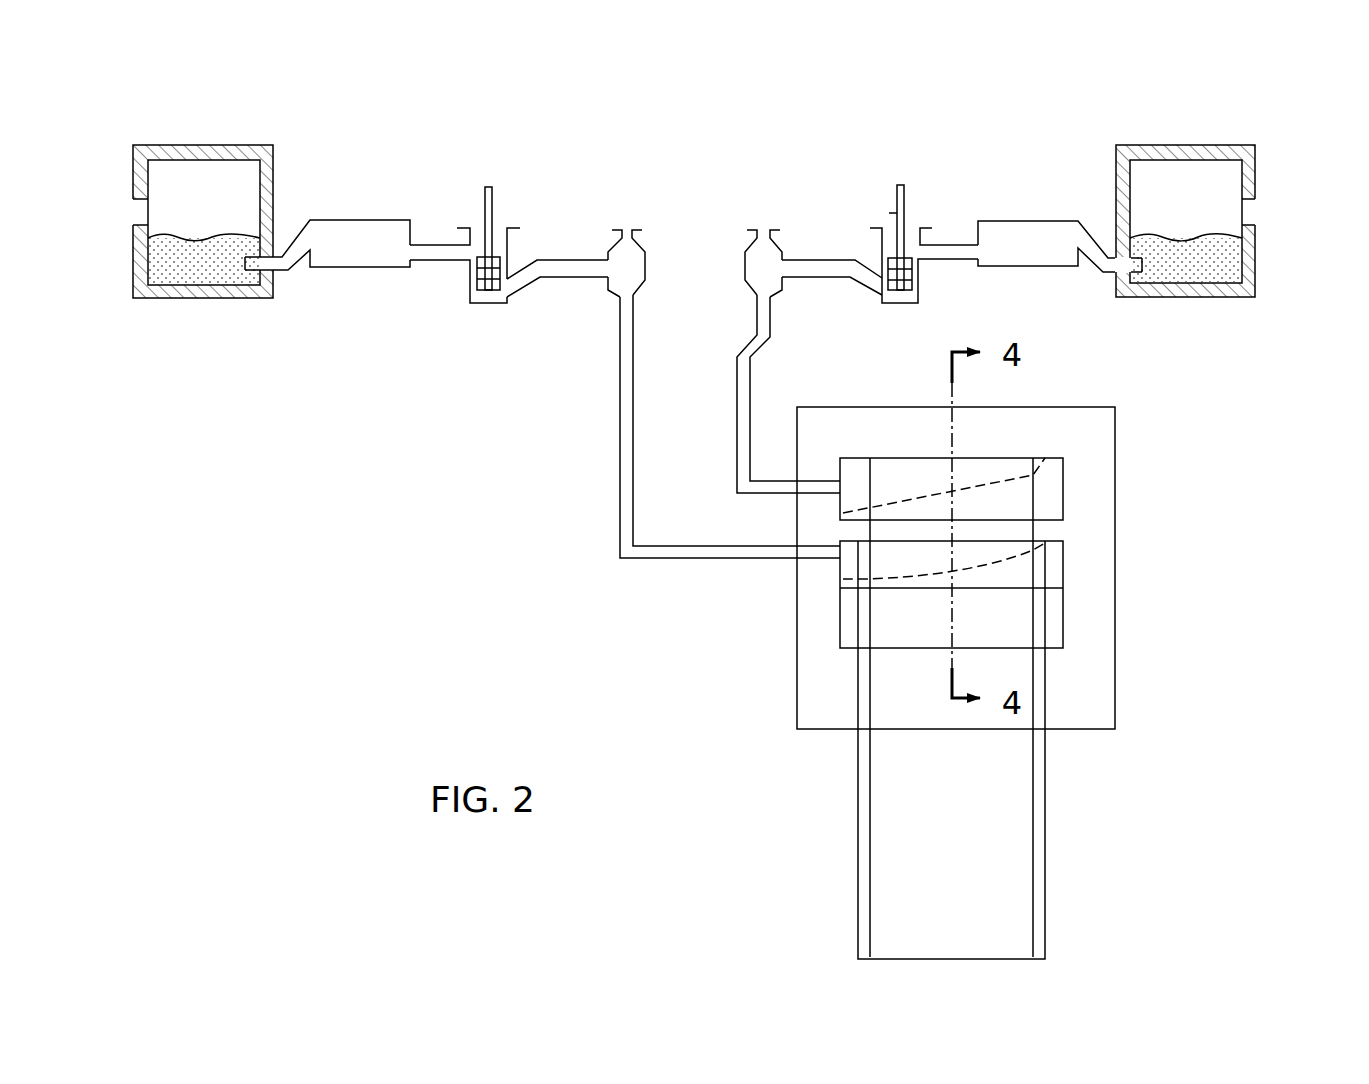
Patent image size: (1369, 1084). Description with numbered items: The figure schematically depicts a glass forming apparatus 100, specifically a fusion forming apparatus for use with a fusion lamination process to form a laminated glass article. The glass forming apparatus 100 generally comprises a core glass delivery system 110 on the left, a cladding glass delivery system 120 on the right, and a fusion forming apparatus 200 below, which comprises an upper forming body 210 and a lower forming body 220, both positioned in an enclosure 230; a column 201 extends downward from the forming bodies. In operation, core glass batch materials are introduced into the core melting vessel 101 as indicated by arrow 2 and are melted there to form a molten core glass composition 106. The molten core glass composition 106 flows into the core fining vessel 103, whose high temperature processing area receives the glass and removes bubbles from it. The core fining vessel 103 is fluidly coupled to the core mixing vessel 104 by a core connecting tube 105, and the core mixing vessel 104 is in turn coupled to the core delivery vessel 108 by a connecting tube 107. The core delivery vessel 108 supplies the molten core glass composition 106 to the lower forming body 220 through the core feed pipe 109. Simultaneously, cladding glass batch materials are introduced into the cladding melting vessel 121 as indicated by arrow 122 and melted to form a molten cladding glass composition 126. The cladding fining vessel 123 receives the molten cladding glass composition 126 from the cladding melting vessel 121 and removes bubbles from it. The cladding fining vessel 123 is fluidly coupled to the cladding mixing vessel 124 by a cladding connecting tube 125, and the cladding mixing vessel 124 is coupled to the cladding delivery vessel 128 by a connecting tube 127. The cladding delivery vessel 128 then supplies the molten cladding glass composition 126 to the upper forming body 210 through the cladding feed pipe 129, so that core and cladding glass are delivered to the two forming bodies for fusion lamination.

The arrow 2 is at (131, 219).
The glass forming apparatus 100 is at (823, 143).
The core melting vessel 101 is at (133, 182).
The core fining vessel 103 is at (362, 220).
The core mixing vessel 104 is at (470, 290).
The core connecting tube 105 is at (442, 245).
The molten core glass composition 106 is at (200, 237).
The connecting tube 107 is at (575, 260).
The core delivery vessel 108 is at (645, 270).
The core feed pipe 109 is at (620, 316).
The core glass delivery system 110 is at (346, 128).
The cladding glass delivery system 120 is at (1038, 198).
The cladding melting vessel 121 is at (1255, 165).
The arrow 122 is at (1238, 212).
The cladding fining vessel 123 is at (1030, 267).
The cladding mixing vessel 124 is at (882, 250).
The cladding connecting tube 125 is at (948, 245).
The molten cladding glass composition 126 is at (1185, 237).
The connecting tube 127 is at (812, 280).
The cladding delivery vessel 128 is at (745, 260).
The cladding feed pipe 129 is at (757, 314).
The fusion forming apparatus 200 is at (1061, 396).
The outer tube 201 is at (1057, 825).
The upper forming body 210 is at (1082, 466).
The lower forming body 220 is at (1082, 553).
The enclosure 230 is at (1112, 407).